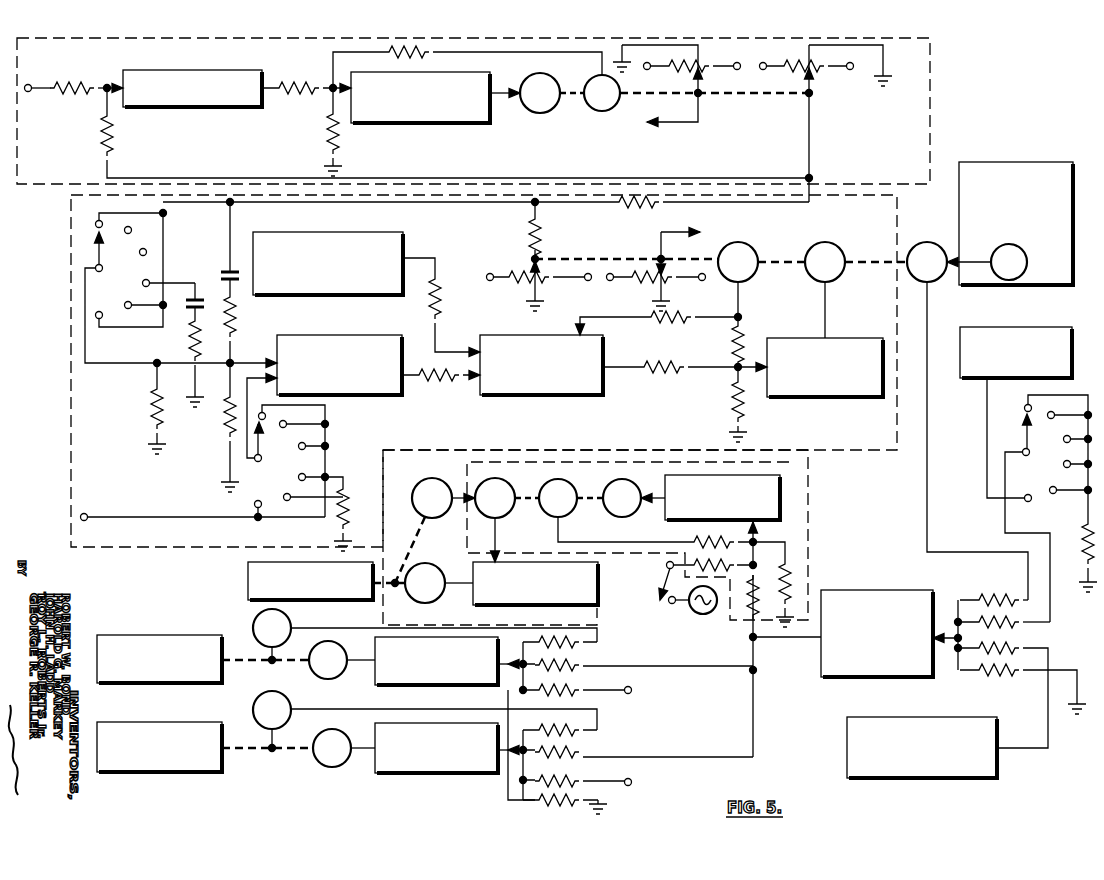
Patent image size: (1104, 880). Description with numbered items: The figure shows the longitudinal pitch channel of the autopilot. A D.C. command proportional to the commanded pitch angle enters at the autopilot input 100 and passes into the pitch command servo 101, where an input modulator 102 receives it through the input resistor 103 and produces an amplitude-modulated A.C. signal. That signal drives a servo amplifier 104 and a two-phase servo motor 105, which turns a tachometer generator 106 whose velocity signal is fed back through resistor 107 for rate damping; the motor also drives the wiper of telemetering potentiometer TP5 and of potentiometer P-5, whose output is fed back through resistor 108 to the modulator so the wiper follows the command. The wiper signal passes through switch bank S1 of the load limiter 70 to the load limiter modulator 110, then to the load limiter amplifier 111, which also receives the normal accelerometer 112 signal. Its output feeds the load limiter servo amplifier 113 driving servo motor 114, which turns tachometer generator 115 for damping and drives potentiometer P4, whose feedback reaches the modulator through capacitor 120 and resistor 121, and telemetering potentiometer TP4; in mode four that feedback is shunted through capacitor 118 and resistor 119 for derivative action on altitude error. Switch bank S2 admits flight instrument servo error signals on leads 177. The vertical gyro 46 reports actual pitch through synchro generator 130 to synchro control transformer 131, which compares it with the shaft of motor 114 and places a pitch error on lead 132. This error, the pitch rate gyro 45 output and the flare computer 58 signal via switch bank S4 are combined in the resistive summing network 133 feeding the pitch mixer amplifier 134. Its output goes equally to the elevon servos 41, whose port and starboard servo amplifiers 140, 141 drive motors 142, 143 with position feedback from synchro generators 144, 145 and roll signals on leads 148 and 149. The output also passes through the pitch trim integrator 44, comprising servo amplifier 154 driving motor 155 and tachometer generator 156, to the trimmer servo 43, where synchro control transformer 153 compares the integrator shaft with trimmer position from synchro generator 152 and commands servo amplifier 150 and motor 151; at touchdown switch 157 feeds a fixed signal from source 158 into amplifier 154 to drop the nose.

The autopilot input 100 is at (31, 91).
The pitch command servo 101 is at (913, 118).
The input modulator 102 is at (201, 108).
The input resistor 103 is at (66, 73).
The servo amplifier 104 is at (432, 123).
The two-phase servo motor 105 is at (544, 113).
The tachometer generator 106 is at (598, 76).
The feedback resistor 107 is at (389, 52).
The feedback resistor 108 is at (98, 147).
The load limiter modulator 110 is at (365, 344).
The load limiter amplifier 111 is at (582, 390).
The normal accelerometer 112 is at (403, 240).
The load limiter servo amplifier 113 is at (833, 398).
The servo motor 114 is at (832, 249).
The tachometer generator 115 is at (755, 240).
The capacitor 118 is at (195, 296).
The resistor 119 is at (190, 339).
The capacitor 120 is at (225, 268).
The resistor 121 is at (238, 312).
The synchro generator 130 is at (1005, 244).
The synchro control transformer 131 is at (927, 243).
The lead 132 is at (928, 317).
The resistive summing network 133 is at (983, 592).
The pitch mixer amplifier 134 is at (888, 590).
The port servo amplifier 140 is at (441, 678).
The starboard servo amplifier 141 is at (477, 724).
The port elevon motor 142 is at (322, 671).
The starboard elevon motor 143 is at (324, 736).
The synchro generator 144 is at (255, 620).
The synchro generator 145 is at (256, 702).
The roll control signal lead 148 is at (632, 688).
The roll control signal lead 149 is at (632, 780).
The servo amplifier 150 is at (476, 608).
The motor 151 is at (413, 602).
The synchro generator 152 is at (424, 484).
The synchro control transformer 153 is at (493, 487).
The servo amplifier 154 is at (665, 516).
The motor 155 is at (629, 491).
The tachometer generator 156 is at (580, 479).
The switch 157 is at (660, 577).
The source 158 is at (674, 604).
The leads 177 is at (86, 515).
The elevon servos 41 is at (360, 703).
The trimmer servo 43 is at (450, 555).
The pitch trim integrator 44 is at (810, 487).
The pitch rate gyro 45 is at (930, 717).
The vertical gyro 46 is at (1032, 162).
The flare computer 58 is at (1048, 327).
The load limiter 70 is at (882, 446).
The switch bank S-1 S1 is at (123, 286).
The switch bank S-2 S2 is at (269, 483).
The switch bank S-4 S4 is at (1034, 474).
The telemetering potentiometer TP-4 TP4 is at (651, 283).
The telemetering potentiometer TP-5 TP5 is at (704, 70).
The potentiometer P-4 P4 is at (511, 278).
The potentiometer P-5 is at (812, 70).